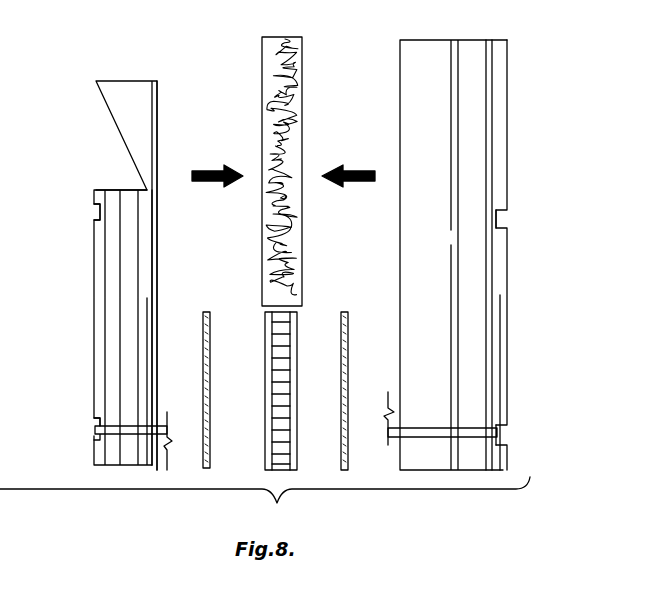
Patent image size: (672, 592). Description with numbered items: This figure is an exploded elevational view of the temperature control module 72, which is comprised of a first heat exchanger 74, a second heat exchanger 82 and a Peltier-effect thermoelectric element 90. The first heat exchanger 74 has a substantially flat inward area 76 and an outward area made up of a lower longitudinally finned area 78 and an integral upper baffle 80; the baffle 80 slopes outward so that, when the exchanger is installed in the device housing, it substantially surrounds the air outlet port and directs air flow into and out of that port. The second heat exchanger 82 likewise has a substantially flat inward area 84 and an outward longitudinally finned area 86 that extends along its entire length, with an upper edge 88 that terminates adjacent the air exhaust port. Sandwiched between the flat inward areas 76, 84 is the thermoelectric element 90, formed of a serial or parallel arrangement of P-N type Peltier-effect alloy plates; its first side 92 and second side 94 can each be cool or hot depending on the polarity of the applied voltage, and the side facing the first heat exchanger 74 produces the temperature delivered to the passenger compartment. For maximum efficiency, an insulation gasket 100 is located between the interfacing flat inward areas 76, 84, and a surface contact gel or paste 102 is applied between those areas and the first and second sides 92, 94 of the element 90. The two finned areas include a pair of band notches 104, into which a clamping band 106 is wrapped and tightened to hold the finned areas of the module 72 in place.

The temperature control module 72 is at (118, 53).
The first heat exchanger 74 is at (65, 316).
The substantially flat inward area 76 is at (158, 236).
The lower longitudinally finned area 78 is at (112, 372).
The integral upper baffle 80 is at (128, 143).
The second heat exchanger 82 is at (520, 124).
The substantially flat inward area 84 is at (400, 96).
The longitudinally finned area 86 is at (470, 268).
The upper edge 88 is at (482, 40).
The Peltier-effect thermoelectric element 90 is at (276, 433).
The first side 92 is at (268, 386).
The second side 94 is at (293, 408).
The insulation gasket 100 is at (273, 74).
The surface contact gel or paste 102 is at (229, 300).
The band notches 104 is at (97, 208).
The clamping band 106 is at (97, 434).